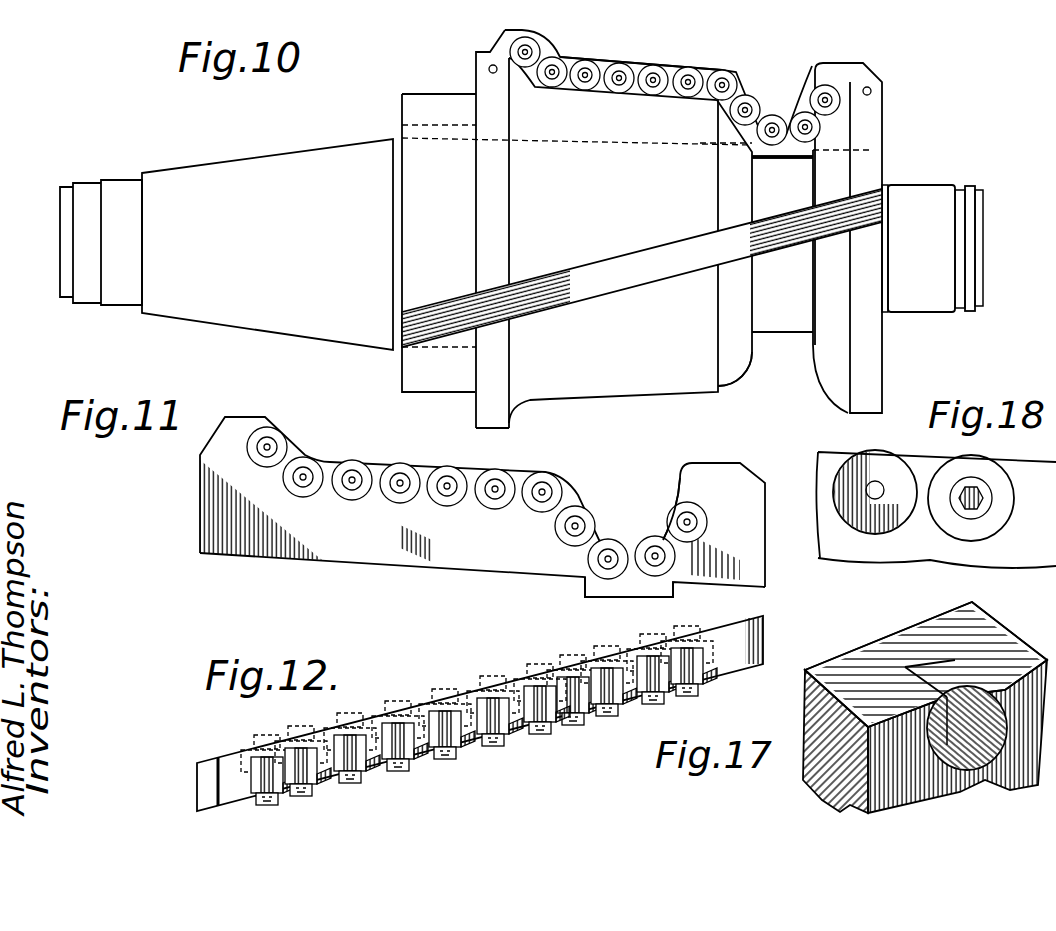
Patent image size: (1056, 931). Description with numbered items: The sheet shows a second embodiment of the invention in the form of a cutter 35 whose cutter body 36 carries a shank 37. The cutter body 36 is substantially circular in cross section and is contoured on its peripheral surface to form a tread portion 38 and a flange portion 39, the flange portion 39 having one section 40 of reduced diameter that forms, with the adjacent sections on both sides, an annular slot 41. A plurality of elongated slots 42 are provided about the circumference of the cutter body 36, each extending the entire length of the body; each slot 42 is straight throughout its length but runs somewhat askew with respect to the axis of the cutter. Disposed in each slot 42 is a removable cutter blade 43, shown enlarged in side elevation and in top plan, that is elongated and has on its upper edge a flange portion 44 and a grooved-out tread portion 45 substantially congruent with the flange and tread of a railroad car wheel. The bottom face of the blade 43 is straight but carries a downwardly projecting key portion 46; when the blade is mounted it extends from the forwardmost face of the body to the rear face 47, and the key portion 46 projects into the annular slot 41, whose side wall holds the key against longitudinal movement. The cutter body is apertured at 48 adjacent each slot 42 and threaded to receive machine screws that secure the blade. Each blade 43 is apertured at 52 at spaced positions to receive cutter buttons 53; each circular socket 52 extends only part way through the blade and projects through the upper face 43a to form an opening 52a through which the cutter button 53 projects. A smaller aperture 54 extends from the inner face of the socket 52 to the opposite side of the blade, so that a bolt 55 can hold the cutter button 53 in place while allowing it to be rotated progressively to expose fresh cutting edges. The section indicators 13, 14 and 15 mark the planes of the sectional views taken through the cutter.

In FIG. 10, the section line 13- 13 is at (456, 31).
In FIG. 10, the section line 14- 14 is at (870, 160).
In FIG. 10, the section line 15- 15 is at (690, 300).
In FIG. 10, the cutter 35 is at (901, 131).
In FIG. 10, the cutter body 36 is at (640, 201).
In FIG. 10, the shank 37 is at (300, 214).
In FIG. 10, the tread portion 38 is at (667, 95).
In FIG. 10, the flange portion 39 is at (795, 347).
In FIG. 10, the section of reduced diameter 40 is at (802, 276).
In FIG. 10, the annular slot 41 is at (812, 345).
In FIG. 10, the elongated slot 42 is at (665, 252).
In FIG. 10, the removable cutter blade 43 is at (832, 63).
In FIG. 11, the removable cutter blade 43 is at (724, 473).
In FIG. 18, the removable cutter blade 43 is at (868, 554).
In FIG. 17, the removable cutter blade 43 is at (911, 709).
In FIG. 12, the removable cutter blade 43 is at (730, 660).
In FIG. 17, the upper face of the blade 43a is at (990, 625).
In FIG. 11, the flange portion 44 is at (382, 470).
In FIG. 11, the grooved-out tread portion 45 is at (657, 525).
In FIG. 10, the key portion 46 is at (790, 160).
In FIG. 11, the key portion 46 is at (615, 590).
In FIG. 10, the rear face 47 is at (476, 87).
In FIG. 10, the aperture 48 is at (489, 69).
In FIG. 18, the aperture (socket) 52 is at (897, 520).
In FIG. 17, the aperture (socket) 52 is at (998, 765).
In FIG. 18, the opening 52a is at (858, 466).
In FIG. 17, the opening 52a is at (952, 685).
In FIG. 12, the opening 52a is at (455, 715).
In FIG. 10, the cutter button 53 is at (585, 60).
In FIG. 11, the cutter button 53 is at (440, 507).
In FIG. 18, the cutter button 53 is at (1003, 480).
In FIG. 12, the cutter button 53 is at (480, 760).
In FIG. 18, the smaller aperture 54 is at (870, 493).
In FIG. 11, the bolt 55 is at (573, 526).
In FIG. 12, the bolt 55 is at (300, 736).